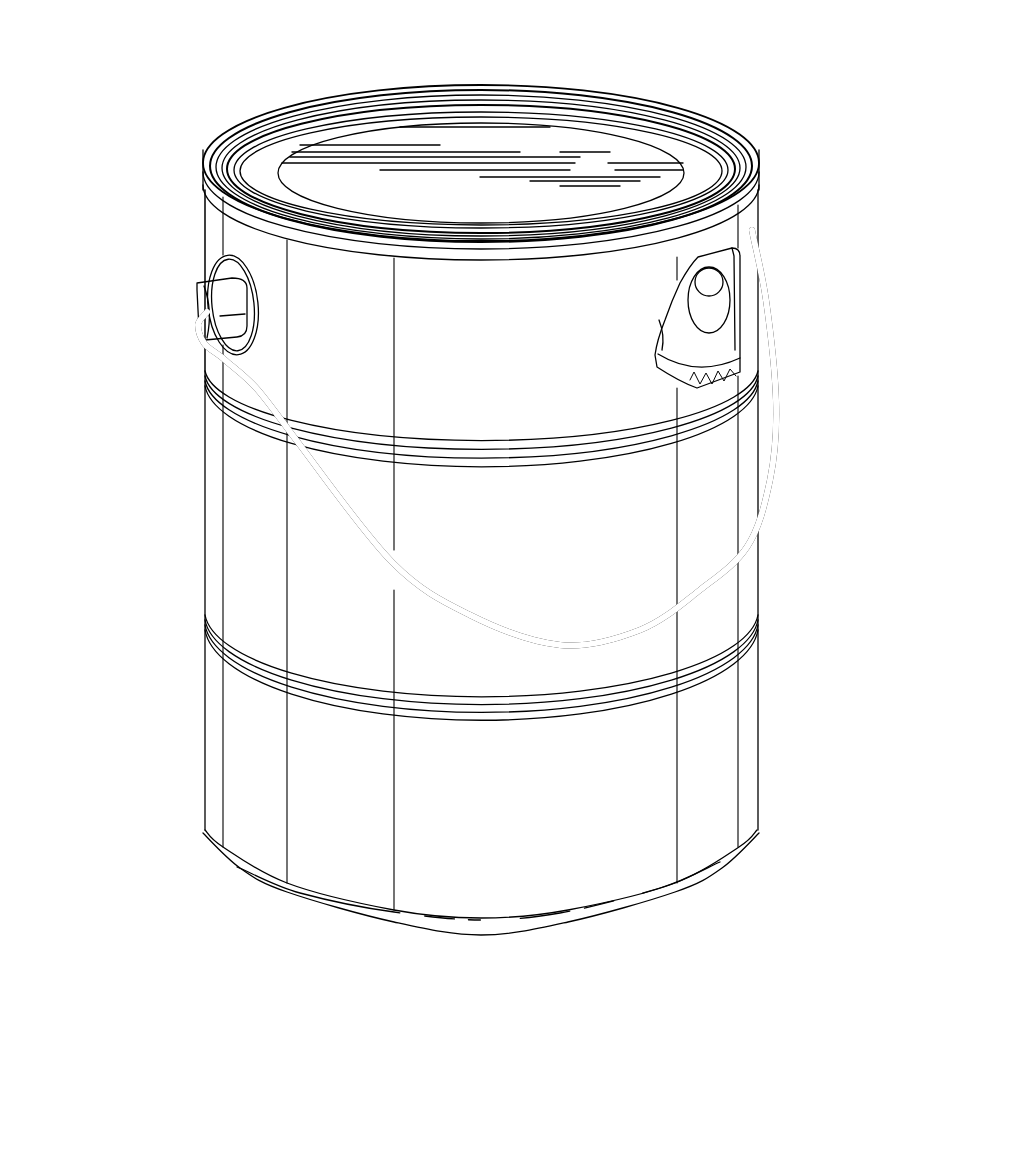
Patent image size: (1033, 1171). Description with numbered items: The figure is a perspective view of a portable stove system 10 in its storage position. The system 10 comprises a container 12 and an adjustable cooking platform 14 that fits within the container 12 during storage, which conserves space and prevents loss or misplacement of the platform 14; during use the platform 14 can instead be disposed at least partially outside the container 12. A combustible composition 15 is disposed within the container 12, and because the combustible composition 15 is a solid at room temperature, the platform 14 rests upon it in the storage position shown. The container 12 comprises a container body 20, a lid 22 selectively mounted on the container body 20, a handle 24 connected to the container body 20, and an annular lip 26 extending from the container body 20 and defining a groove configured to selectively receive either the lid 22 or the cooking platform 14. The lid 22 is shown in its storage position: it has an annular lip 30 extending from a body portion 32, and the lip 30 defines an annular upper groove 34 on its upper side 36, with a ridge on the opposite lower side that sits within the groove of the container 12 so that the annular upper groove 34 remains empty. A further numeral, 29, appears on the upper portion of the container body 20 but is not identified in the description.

The portable stove system 10 is at (153, 90).
The container 12 is at (781, 566).
The adjustable cooking platform 14 is at (680, 347).
The combustible composition 15 is at (740, 337).
The container body 20 is at (498, 375).
The lid 22 is at (425, 205).
The handle 24 is at (780, 368).
The annular lip 26 is at (218, 150).
The upper side wall portion 29 is at (325, 335).
The annular lip 30 is at (712, 148).
The body portion 32 is at (583, 167).
The annular upper groove 34 is at (240, 160).
The upper side 36 is at (477, 133).